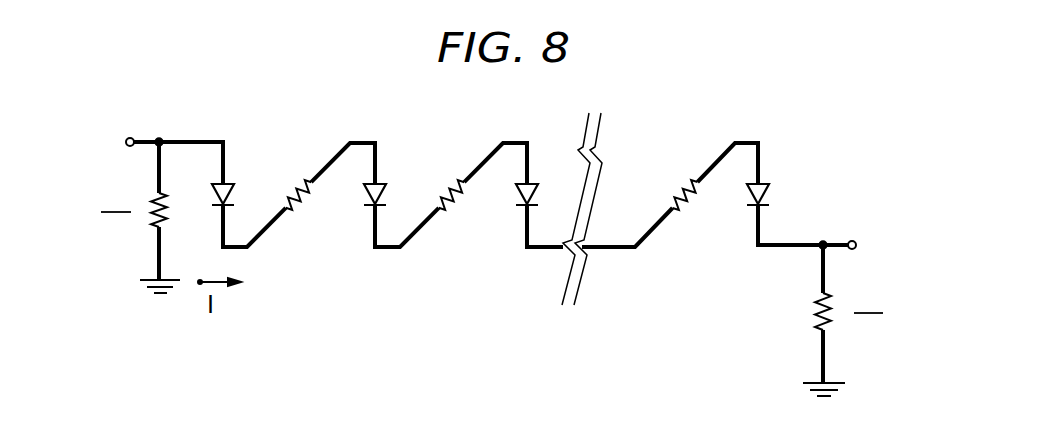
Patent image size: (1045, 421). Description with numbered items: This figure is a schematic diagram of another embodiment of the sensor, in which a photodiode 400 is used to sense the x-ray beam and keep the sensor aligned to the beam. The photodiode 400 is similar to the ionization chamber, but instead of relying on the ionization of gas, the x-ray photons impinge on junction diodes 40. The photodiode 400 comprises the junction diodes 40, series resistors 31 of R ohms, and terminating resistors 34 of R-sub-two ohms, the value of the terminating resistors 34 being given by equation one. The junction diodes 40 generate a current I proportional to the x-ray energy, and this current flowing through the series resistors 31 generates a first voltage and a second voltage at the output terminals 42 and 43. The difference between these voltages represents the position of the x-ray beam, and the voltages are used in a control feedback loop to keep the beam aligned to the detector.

The output terminal 42 is at (130, 138).
The output terminal 43 is at (853, 241).
The junction diode 40 is at (225, 183).
The series resistor 31 is at (294, 205).
The terminating resistor 34 is at (157, 224).
The photodiode 400 is at (257, 335).